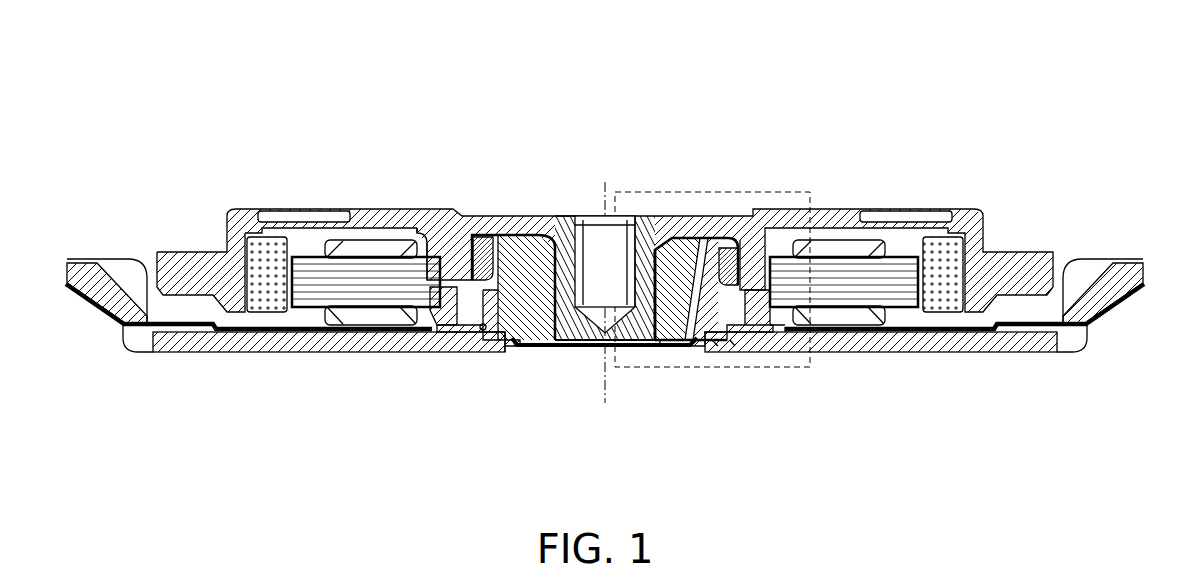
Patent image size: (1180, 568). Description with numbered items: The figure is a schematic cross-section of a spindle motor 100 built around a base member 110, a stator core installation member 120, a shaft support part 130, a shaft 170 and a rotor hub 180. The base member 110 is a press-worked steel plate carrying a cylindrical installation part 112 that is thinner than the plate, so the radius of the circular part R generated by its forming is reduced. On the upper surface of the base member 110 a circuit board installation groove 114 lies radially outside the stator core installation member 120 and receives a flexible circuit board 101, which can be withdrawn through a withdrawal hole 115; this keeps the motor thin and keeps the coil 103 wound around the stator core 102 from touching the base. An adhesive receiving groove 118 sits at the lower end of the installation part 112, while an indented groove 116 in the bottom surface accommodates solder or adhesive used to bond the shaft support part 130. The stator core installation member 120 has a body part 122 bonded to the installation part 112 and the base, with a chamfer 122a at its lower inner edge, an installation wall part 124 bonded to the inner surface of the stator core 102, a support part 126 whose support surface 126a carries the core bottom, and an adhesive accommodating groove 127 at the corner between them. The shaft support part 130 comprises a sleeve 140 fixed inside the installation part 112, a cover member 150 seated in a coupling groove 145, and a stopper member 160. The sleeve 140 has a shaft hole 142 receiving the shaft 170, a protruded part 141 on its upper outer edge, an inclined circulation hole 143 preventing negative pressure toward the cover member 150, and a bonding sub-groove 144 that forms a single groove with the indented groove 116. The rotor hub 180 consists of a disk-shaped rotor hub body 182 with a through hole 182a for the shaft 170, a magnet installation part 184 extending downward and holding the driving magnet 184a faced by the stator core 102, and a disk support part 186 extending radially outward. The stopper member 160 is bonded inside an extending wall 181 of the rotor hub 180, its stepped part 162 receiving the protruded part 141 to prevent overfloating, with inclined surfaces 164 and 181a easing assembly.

The spindle motor 100 is at (580, 25).
The base member 110 is at (990, 345).
The withdrawal hole 115 is at (1072, 338).
The circuit board 101 is at (917, 332).
The circuit board installation groove 114 is at (790, 340).
The stator core 102 is at (868, 290).
The coil 103 is at (836, 318).
The rotor hub 180 is at (148, 107).
The rotor hub body 182 is at (358, 207).
The magnet installation part 184 is at (250, 238).
The disk support part 186 is at (170, 252).
The extending wall 181 is at (855, 208).
The inclined surface 181a is at (858, 210).
The driving magnet 184a is at (953, 255).
The shaft 170 is at (558, 217).
The through hole 182a is at (590, 217).
The shaft support part 130 is at (629, 347).
The sleeve 140 is at (540, 217).
The protruded part 141 is at (492, 213).
The inclined surface 164 is at (482, 238).
The adhesive accommodating groove 127 is at (440, 208).
The shaft hole 142 is at (647, 232).
The stepped part 162 is at (705, 242).
The circulation hole 143 is at (697, 240).
The bonding sub-groove 144 is at (693, 350).
The stopper member 160 is at (745, 240).
The stator core installation member 120 is at (342, 465).
The body part 122 is at (473, 340).
The installation wall part 124 is at (440, 340).
The support part 126 is at (417, 340).
The chamfer 122a is at (500, 347).
The indented groove 116 is at (493, 352).
The support surface 126a is at (765, 340).
The cover member 150 is at (585, 349).
The coupling groove 145 is at (652, 348).
The installation part 112 is at (717, 350).
The adhesive receiving groove 118 is at (738, 346).
The circular part R is at (730, 357).